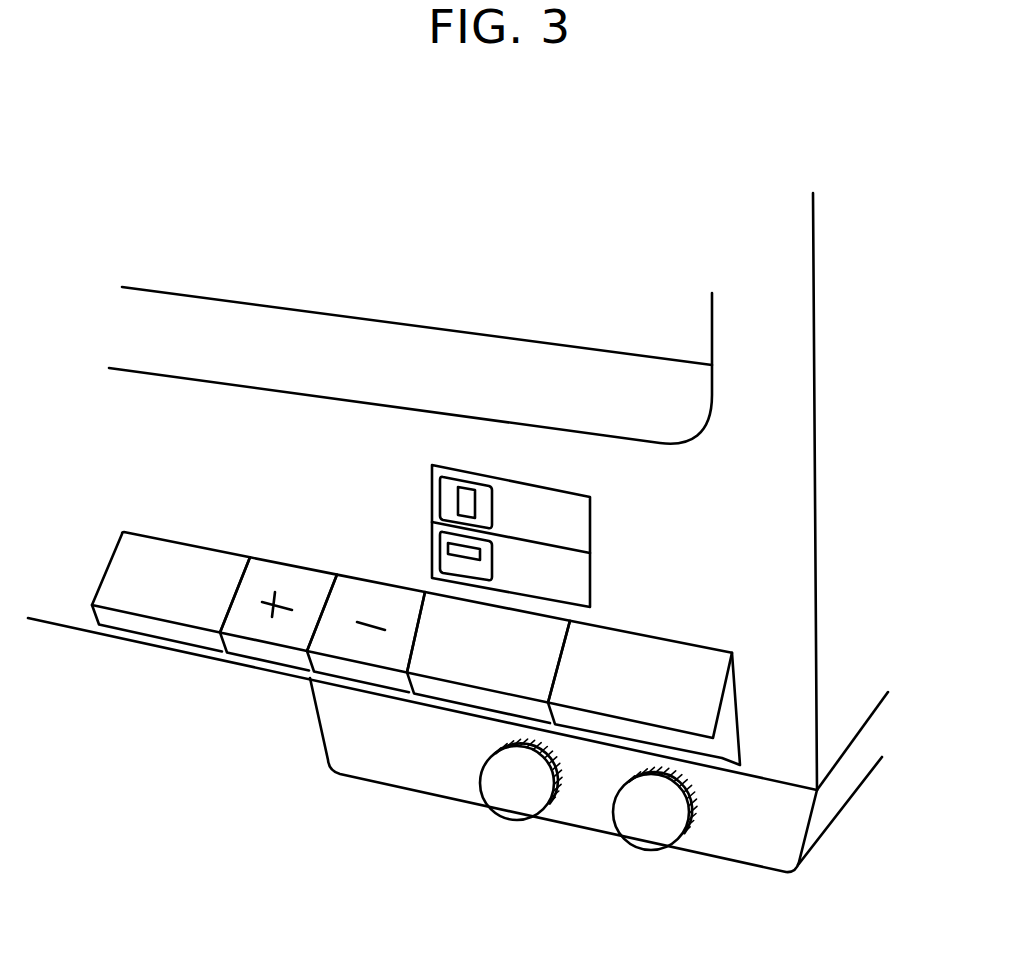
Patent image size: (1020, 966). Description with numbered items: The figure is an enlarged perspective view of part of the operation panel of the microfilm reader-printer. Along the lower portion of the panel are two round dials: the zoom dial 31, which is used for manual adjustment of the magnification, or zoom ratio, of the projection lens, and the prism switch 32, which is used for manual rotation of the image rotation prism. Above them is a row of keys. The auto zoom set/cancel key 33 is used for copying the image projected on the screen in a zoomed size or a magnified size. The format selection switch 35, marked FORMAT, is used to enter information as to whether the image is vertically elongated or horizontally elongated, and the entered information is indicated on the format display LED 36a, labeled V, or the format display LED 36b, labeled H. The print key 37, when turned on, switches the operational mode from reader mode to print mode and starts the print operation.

The zoom dial 31 is at (643, 832).
The prism switch 32 is at (513, 795).
The auto zoom set/cancel key 33 is at (182, 613).
The format selection switch 35 is at (462, 665).
The format display LED 36a is at (585, 513).
The format display LED 36b is at (585, 577).
The print key 37 is at (608, 703).